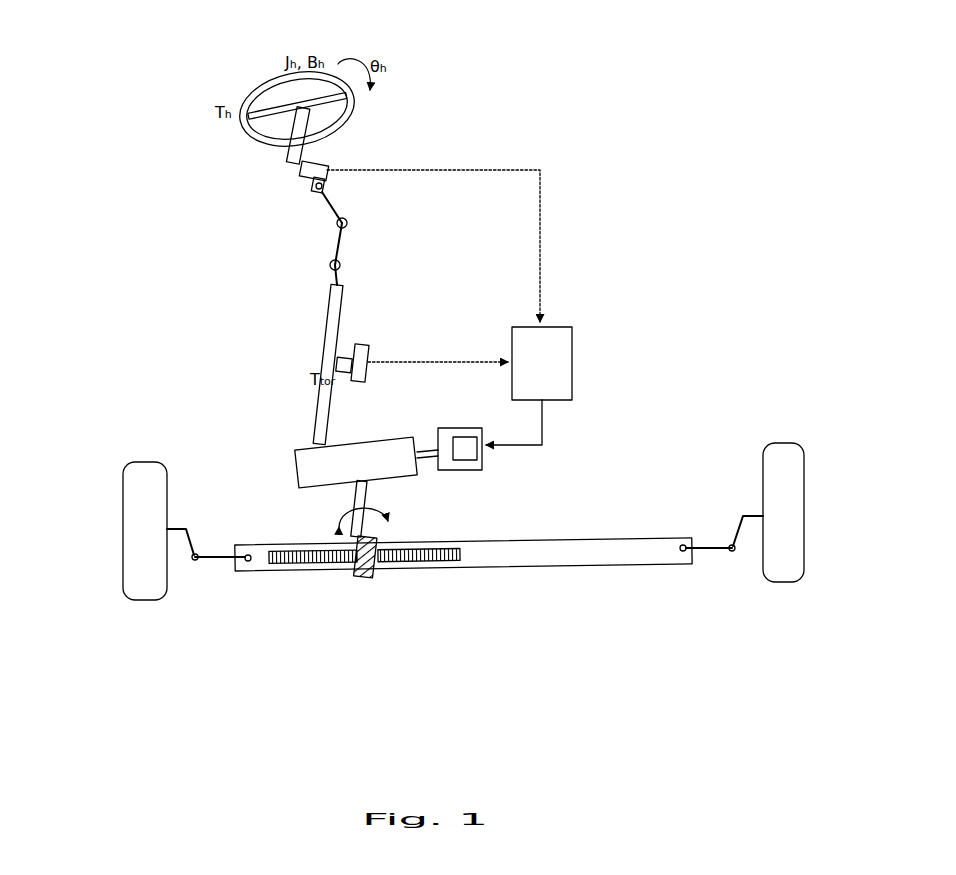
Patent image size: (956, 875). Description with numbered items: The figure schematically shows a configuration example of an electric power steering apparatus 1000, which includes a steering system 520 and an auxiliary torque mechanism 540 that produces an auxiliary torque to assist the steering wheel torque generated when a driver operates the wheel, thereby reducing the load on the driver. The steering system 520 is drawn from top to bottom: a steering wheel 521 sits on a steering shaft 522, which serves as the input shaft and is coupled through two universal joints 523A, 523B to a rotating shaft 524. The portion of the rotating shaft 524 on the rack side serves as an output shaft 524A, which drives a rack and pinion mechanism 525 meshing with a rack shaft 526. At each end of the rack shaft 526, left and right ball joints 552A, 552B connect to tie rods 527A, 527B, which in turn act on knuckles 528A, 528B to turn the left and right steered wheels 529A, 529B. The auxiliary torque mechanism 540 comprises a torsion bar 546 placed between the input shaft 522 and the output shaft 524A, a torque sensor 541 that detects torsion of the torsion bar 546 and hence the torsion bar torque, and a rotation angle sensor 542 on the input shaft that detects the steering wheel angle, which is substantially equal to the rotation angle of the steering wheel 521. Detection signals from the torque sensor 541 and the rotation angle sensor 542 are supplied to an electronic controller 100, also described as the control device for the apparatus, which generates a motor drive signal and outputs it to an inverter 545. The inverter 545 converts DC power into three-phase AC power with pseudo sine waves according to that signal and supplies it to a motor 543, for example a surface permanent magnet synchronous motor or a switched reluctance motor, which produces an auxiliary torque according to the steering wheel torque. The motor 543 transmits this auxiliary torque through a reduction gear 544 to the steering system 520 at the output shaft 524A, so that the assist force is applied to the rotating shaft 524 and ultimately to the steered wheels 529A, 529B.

The electric power steering apparatus 1000 is at (505, 78).
The electronic controller (ECU) 100 is at (560, 327).
The steering system 520 is at (349, 238).
The steering wheel 521 is at (257, 90).
The steering shaft 522 is at (321, 140).
The universal joint 523A is at (348, 223).
The universal joint 523B is at (341, 265).
The rotating shaft 524 is at (346, 310).
The output shaft 524A is at (374, 490).
The rack and pinion mechanism 525 is at (378, 586).
The rack shaft 526 is at (500, 548).
The tie rod 527A is at (213, 556).
The tie rod 527B is at (720, 547).
The knuckle 528A is at (180, 528).
The knuckle 528B is at (745, 517).
The steered wheel 529A is at (147, 586).
The steered wheel 529B is at (781, 576).
The auxiliary torque mechanism 540 is at (578, 266).
The torque sensor 541 is at (368, 371).
The rotation angle sensor 542 is at (328, 166).
The motor 543 is at (455, 428).
The reduction gear 544 is at (299, 450).
The inverter 545 is at (466, 458).
The torsion bar 546 is at (337, 363).
The ball joint 552A is at (244, 569).
The ball joint 552B is at (683, 552).